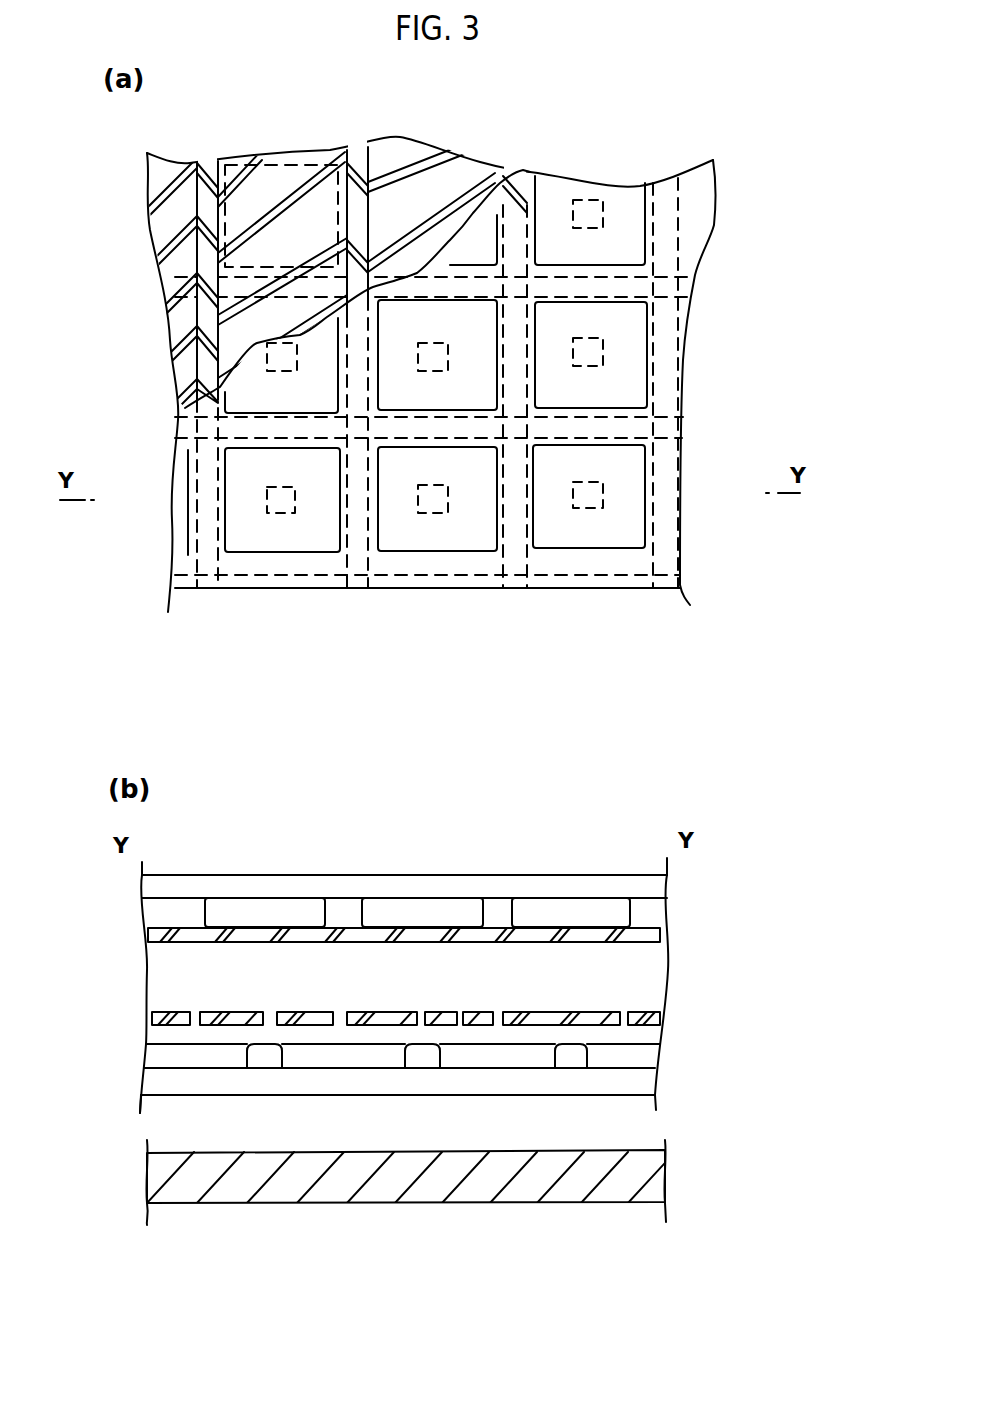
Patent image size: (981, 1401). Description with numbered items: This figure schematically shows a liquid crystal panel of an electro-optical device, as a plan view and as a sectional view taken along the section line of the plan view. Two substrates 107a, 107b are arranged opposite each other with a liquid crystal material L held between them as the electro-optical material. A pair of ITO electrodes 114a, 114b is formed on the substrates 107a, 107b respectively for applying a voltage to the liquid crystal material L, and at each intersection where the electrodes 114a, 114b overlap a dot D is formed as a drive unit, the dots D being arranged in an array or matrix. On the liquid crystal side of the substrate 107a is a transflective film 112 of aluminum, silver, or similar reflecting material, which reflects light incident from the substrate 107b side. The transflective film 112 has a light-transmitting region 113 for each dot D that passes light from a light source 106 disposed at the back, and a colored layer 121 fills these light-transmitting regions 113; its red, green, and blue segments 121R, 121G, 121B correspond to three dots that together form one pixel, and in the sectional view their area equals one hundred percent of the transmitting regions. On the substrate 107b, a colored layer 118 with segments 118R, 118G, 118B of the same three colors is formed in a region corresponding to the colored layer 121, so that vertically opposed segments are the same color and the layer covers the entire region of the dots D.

The substrate 107b is at (178, 268).
The substrate 107a is at (185, 447).
The electrode 114a is at (207, 188).
The electrode 114b is at (468, 188).
The dot D is at (304, 190).
The colored layer 118 is at (516, 551).
The colored layer 118R is at (630, 352).
The colored layer 118G is at (320, 342).
The colored layer 118B is at (473, 345).
The light-transmitting region 113 is at (265, 498).
The transflective film 112 is at (323, 1050).
The liquid crystal material L is at (625, 963).
The colored layer 121 is at (417, 912).
The colored layer 121R is at (293, 513).
The colored layer 121G is at (443, 513).
The colored layer 121B is at (549, 885).
The light source 106 is at (653, 1182).